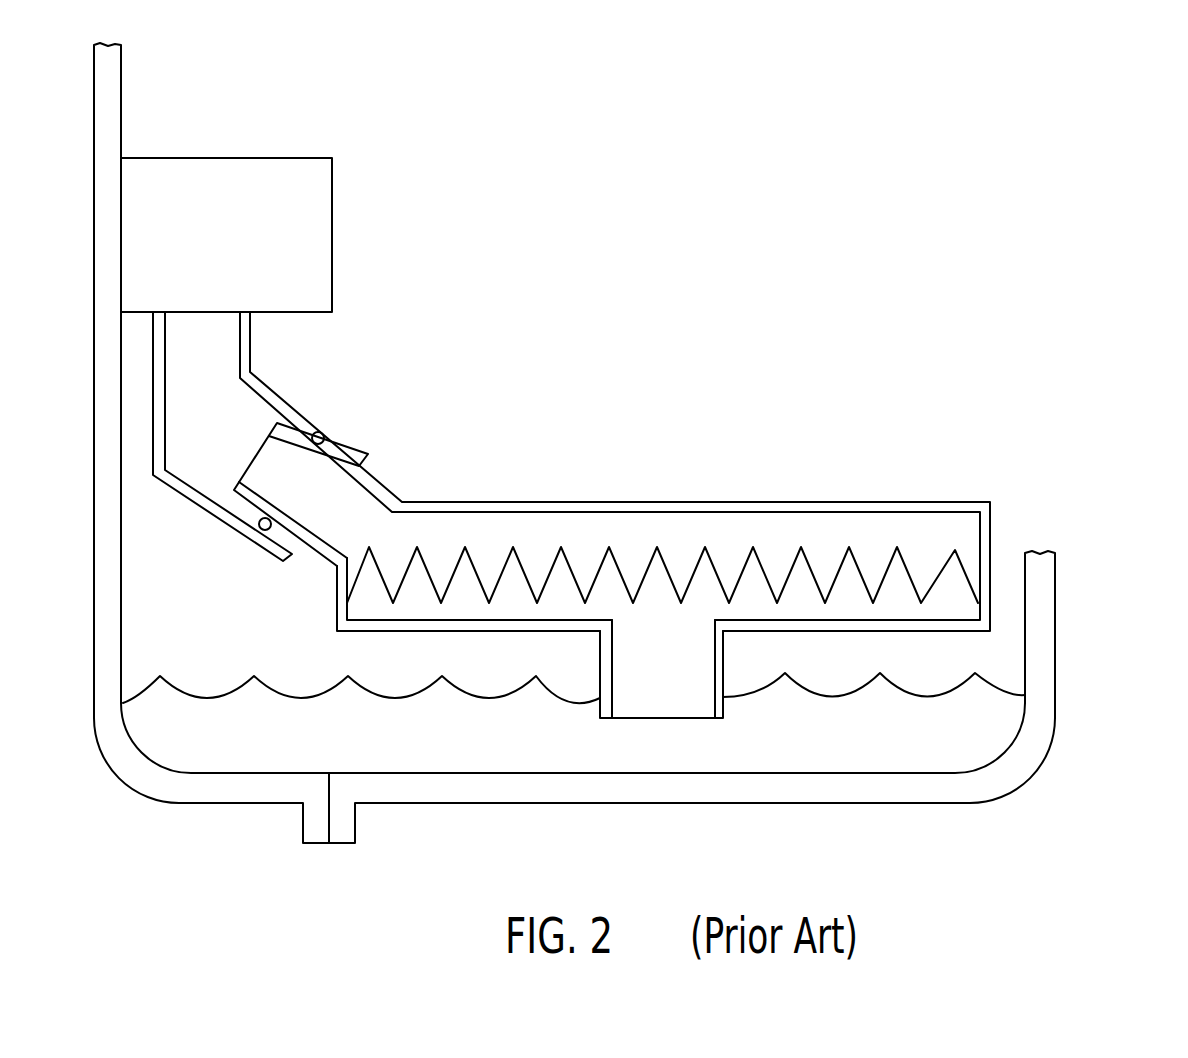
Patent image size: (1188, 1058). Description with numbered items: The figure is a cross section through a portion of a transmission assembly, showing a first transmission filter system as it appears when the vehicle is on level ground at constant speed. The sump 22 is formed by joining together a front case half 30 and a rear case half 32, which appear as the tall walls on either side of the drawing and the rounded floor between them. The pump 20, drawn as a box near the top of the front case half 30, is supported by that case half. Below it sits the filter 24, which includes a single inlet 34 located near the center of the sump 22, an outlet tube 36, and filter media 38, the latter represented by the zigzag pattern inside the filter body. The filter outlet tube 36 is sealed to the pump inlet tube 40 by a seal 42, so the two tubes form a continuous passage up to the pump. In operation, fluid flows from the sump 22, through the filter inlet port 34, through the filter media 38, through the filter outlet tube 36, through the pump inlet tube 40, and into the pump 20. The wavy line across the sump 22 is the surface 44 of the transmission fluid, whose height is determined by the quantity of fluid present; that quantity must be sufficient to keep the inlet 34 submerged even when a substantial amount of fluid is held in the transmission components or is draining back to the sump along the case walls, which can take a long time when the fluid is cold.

The pump 20 is at (326, 227).
The sump 22 is at (380, 757).
The filter 24 is at (546, 502).
The front case half 30 is at (122, 108).
The rear case half 32 is at (1057, 618).
The inlet 34 is at (672, 717).
The outlet tube 36 is at (317, 550).
The filter media 38 is at (897, 548).
The pump inlet tube 40 is at (201, 507).
The seal 42 is at (319, 433).
The surface 44 is at (928, 697).